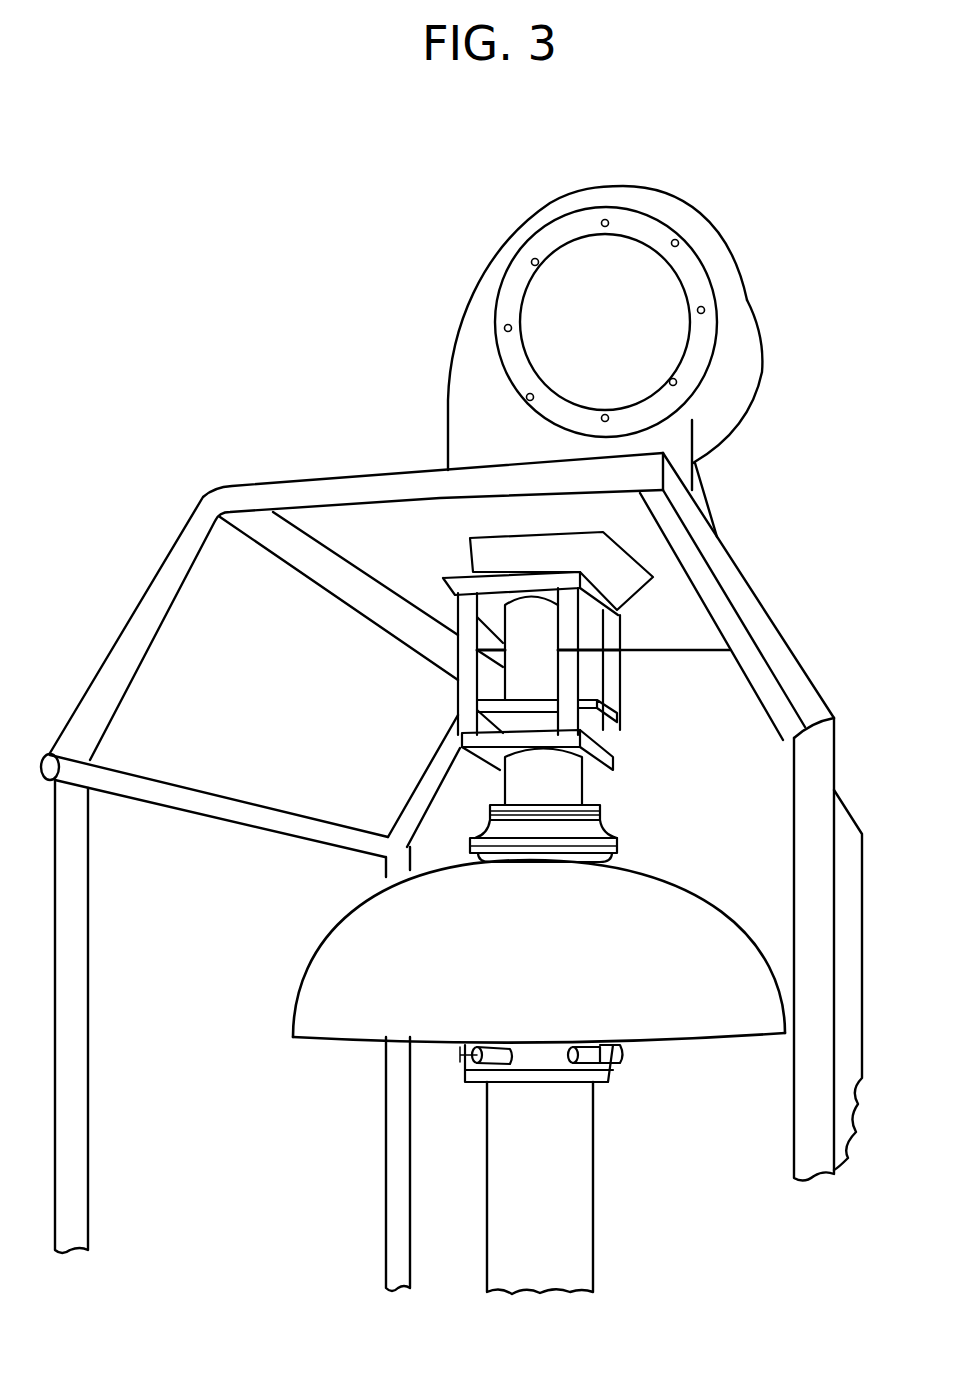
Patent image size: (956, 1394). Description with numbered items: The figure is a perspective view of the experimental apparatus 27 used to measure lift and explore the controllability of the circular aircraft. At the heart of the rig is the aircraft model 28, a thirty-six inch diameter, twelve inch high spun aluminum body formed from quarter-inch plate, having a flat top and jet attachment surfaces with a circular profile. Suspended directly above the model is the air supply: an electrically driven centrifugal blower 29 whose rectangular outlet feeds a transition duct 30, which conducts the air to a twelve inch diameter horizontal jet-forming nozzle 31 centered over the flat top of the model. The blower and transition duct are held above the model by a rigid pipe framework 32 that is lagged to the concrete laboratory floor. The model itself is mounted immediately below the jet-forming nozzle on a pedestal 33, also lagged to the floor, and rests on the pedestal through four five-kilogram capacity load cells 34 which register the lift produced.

The experimental apparatus 27 is at (362, 408).
The aircraft model 28 is at (330, 957).
The centrifugal blower 29 is at (478, 313).
The transition duct 30 is at (620, 563).
The jet-forming nozzle 31 is at (593, 830).
The rigid pipe framework 32 is at (190, 517).
The pedestal 33 is at (568, 1212).
The load cells 34 is at (613, 1073).